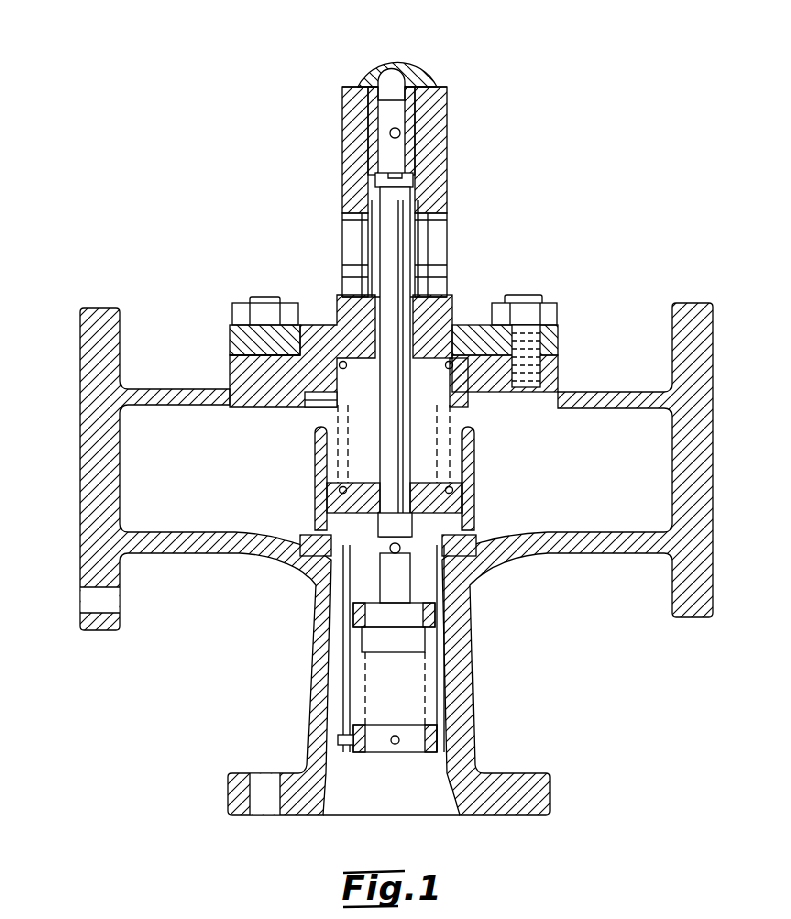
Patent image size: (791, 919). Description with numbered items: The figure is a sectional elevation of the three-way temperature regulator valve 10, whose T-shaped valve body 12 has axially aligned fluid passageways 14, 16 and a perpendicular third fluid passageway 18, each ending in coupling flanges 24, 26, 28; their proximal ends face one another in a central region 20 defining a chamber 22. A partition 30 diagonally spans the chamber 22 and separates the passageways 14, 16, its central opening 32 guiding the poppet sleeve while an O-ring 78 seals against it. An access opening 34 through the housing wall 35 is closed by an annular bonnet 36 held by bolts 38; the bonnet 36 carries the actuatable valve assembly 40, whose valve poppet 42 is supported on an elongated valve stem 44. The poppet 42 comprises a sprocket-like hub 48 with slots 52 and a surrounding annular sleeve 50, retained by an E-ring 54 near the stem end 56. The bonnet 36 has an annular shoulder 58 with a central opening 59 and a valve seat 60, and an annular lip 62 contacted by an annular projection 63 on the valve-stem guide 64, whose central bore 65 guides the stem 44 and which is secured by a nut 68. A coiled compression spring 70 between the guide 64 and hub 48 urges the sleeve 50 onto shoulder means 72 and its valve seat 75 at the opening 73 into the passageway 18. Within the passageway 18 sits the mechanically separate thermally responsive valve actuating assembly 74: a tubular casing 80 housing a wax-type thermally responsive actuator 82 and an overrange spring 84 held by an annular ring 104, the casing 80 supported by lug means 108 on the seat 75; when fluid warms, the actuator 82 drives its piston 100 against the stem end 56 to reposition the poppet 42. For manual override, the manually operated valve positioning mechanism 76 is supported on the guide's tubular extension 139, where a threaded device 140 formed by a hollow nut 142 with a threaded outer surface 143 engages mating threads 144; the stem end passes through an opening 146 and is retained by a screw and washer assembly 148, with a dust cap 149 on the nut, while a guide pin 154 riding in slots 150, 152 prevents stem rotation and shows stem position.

The three-way temperature regulator valve 10 is at (163, 287).
The valve body 12 is at (602, 555).
The fluid passageway 14 is at (95, 470).
The fluid passageway 16 is at (673, 463).
The third fluid passageway 18 is at (393, 795).
The central region 20 is at (310, 438).
The chamber 22 is at (302, 513).
The flange 24 is at (98, 623).
The flange 26 is at (693, 598).
The flange 28 is at (548, 790).
The partition 30 is at (503, 440).
The central opening 32 is at (471, 490).
The access opening 34 is at (252, 373).
The housing wall 35 is at (233, 405).
The bonnet 36 is at (257, 337).
The bolts 38 is at (262, 307).
The actuatable valve assembly 40 is at (339, 162).
The valve poppet 42 is at (477, 522).
The valve stem 44 is at (387, 235).
The sprocket-like hub 48 is at (357, 444).
The annular sleeve 50 is at (312, 460).
The slots 52 is at (429, 444).
The E-ring 54 is at (317, 517).
The end of valve stem 56 is at (345, 570).
The annular shoulder 58 is at (533, 373).
The central opening 59 is at (413, 421).
The annular valve seat 60 is at (316, 416).
The annular lip 62 is at (282, 325).
The annular projection 63 is at (503, 343).
The valve-stem guide 64 is at (340, 300).
The central bore 65 is at (355, 322).
The nut 68 is at (467, 300).
The coiled compression spring 70 is at (396, 385).
The shoulder means 72 is at (450, 562).
The opening 73 is at (455, 585).
The thermally responsive valve actuating assembly 74 is at (347, 752).
The valve seat 75 is at (500, 557).
The manually operated valve positioning mechanism 76 is at (447, 148).
The O-ring 78 is at (478, 472).
The tubular casing 80 is at (348, 655).
The thermally responsive actuator 82 is at (407, 620).
The overrange spring 84 is at (353, 717).
The piston 100 is at (360, 583).
The annular ring 104 is at (437, 738).
The lug means 108 is at (317, 567).
The tubular extension 139 is at (342, 117).
The threaded device 140 is at (337, 84).
The hollow nut 142 is at (437, 82).
The threaded outer surface 143 is at (432, 118).
The mating threads 144 is at (427, 223).
The opening 146 is at (372, 228).
The screw and washer assembly 148 is at (407, 173).
The dust cap 149 is at (398, 62).
The slot 150 is at (437, 223).
The slot 152 is at (350, 225).
The guide pin 154 is at (440, 270).